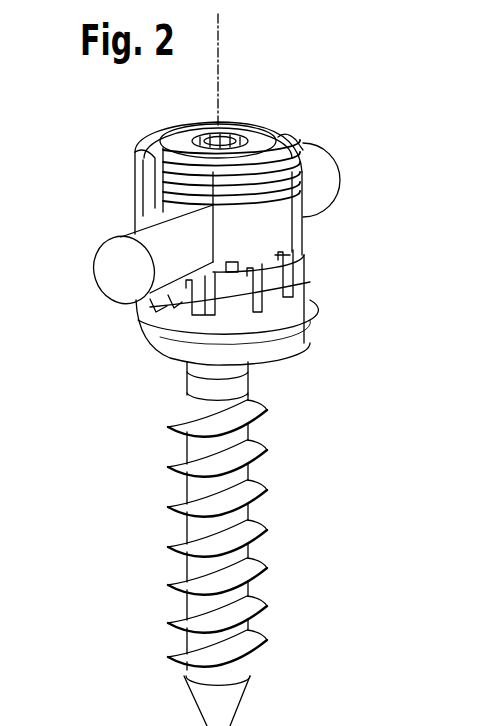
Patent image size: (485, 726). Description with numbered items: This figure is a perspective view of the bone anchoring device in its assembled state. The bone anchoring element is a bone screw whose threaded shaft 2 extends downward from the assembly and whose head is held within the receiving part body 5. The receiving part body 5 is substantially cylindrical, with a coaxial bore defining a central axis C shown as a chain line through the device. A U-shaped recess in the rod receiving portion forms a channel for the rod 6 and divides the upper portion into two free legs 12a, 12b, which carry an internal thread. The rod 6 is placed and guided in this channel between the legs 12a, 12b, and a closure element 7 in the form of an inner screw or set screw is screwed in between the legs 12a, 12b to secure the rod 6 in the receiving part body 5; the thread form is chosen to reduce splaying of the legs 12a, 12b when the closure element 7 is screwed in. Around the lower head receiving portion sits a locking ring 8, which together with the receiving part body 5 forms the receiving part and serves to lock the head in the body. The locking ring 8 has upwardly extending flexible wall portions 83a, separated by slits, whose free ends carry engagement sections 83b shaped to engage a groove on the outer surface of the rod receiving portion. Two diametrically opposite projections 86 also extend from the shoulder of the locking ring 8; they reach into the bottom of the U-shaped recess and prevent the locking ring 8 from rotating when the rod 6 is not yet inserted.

The central axis C is at (222, 36).
The threaded shaft 2 is at (262, 480).
The receiving part body 5 is at (282, 227).
The rod 6 is at (313, 158).
The closure element 7 is at (252, 136).
The locking ring 8 is at (306, 327).
The free leg 12a is at (137, 198).
The free leg 12b is at (290, 202).
The flexible wall portion 83a is at (279, 278).
The engagement section 83b is at (294, 255).
The projection 86 is at (180, 300).